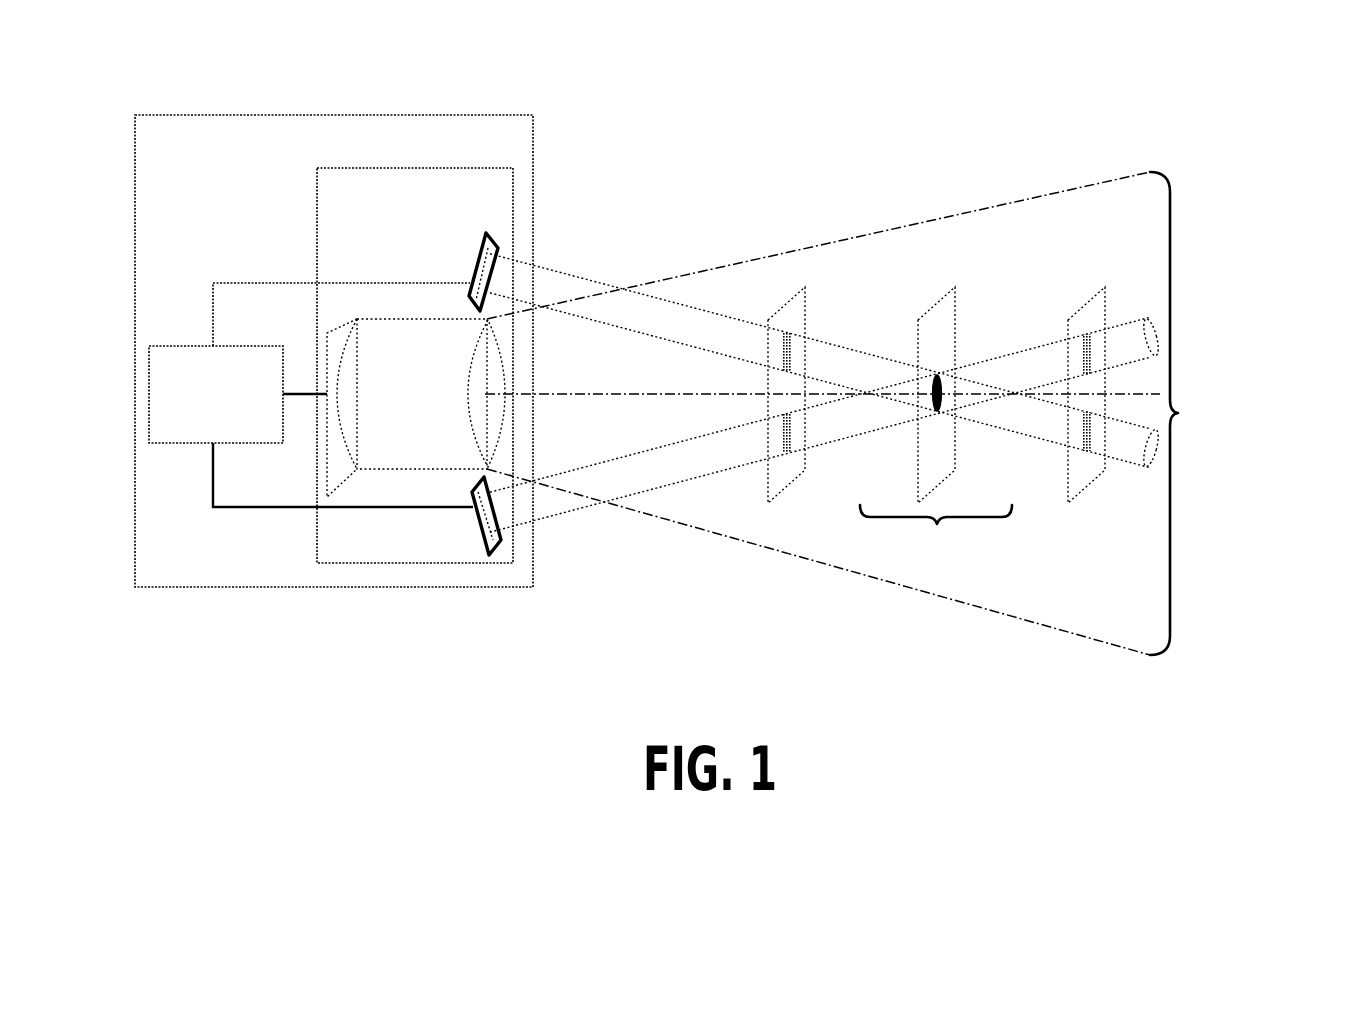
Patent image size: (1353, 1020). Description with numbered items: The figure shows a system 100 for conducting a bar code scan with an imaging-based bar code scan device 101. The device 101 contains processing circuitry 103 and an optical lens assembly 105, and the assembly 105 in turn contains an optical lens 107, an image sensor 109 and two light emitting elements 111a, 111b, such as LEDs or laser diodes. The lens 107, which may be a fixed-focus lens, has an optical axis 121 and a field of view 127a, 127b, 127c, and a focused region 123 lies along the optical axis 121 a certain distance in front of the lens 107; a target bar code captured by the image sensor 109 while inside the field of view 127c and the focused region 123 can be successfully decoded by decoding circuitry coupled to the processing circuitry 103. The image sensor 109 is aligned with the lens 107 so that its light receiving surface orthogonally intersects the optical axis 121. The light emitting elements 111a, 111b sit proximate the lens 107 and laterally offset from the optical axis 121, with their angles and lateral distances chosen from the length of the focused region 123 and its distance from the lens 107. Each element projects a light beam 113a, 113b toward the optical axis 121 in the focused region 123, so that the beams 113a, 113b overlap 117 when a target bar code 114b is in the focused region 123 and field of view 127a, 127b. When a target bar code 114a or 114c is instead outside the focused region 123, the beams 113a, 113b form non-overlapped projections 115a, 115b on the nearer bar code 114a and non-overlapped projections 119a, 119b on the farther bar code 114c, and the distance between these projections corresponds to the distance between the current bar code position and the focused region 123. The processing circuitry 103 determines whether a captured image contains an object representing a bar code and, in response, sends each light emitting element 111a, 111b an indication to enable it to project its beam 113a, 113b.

The system 100 is at (726, 99).
The bar code scan device 101 is at (455, 146).
The processing circuitry 103 is at (230, 428).
The optical lens assembly 105 is at (478, 221).
The optical lens 107 is at (425, 416).
The image sensor 109 is at (340, 469).
The light emitting element 111a is at (487, 234).
The light emitting element 111b is at (489, 547).
The light beam 113a is at (690, 307).
The light beam 113b is at (662, 488).
The target bar code 114a is at (795, 296).
The target bar code 114b is at (918, 318).
The target bar code 114c is at (1100, 473).
The light beam projection 115a is at (787, 355).
The light beam projection 115b is at (787, 433).
The overlap 117 is at (935, 413).
The light beam projection 119a is at (1088, 357).
The light beam projection 119b is at (1088, 433).
The optical axis 121 is at (598, 394).
The focused region 123 is at (936, 540).
The field of view 127a is at (665, 280).
The field of view 127b is at (975, 607).
The field of view 127c is at (1210, 413).